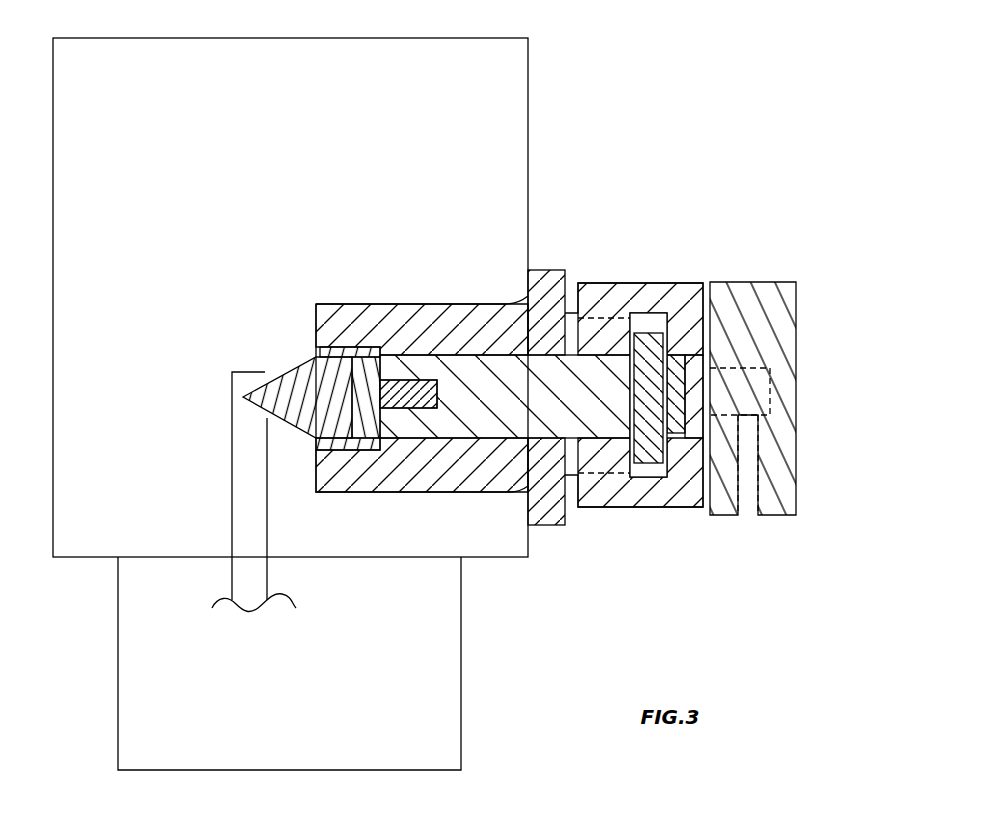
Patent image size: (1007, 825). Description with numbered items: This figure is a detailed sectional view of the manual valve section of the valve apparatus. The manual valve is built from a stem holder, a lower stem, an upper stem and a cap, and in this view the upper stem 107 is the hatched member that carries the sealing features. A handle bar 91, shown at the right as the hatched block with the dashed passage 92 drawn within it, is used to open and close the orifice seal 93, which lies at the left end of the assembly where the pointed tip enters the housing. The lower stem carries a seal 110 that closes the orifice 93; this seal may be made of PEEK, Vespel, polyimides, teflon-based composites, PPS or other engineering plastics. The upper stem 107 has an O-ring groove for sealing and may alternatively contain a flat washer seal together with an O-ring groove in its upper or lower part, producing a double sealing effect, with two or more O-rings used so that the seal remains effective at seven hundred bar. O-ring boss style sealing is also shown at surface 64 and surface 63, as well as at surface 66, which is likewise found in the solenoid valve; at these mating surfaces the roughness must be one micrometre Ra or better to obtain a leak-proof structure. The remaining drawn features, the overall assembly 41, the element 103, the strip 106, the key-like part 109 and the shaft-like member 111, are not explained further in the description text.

The tool assembly 41 is at (612, 232).
The sealing surface 63 is at (517, 292).
The sealing surface 64 is at (625, 348).
The sealing surface 66 is at (529, 288).
The handle bar 91 is at (755, 282).
The bore 92 is at (760, 486).
The orifice seal 93 is at (262, 363).
The hub 103 is at (658, 289).
The clamping strip 106 is at (335, 446).
The upper stem 107 is at (444, 483).
The key 109 is at (405, 378).
The seal 110 is at (297, 407).
The shaft 111 is at (428, 412).